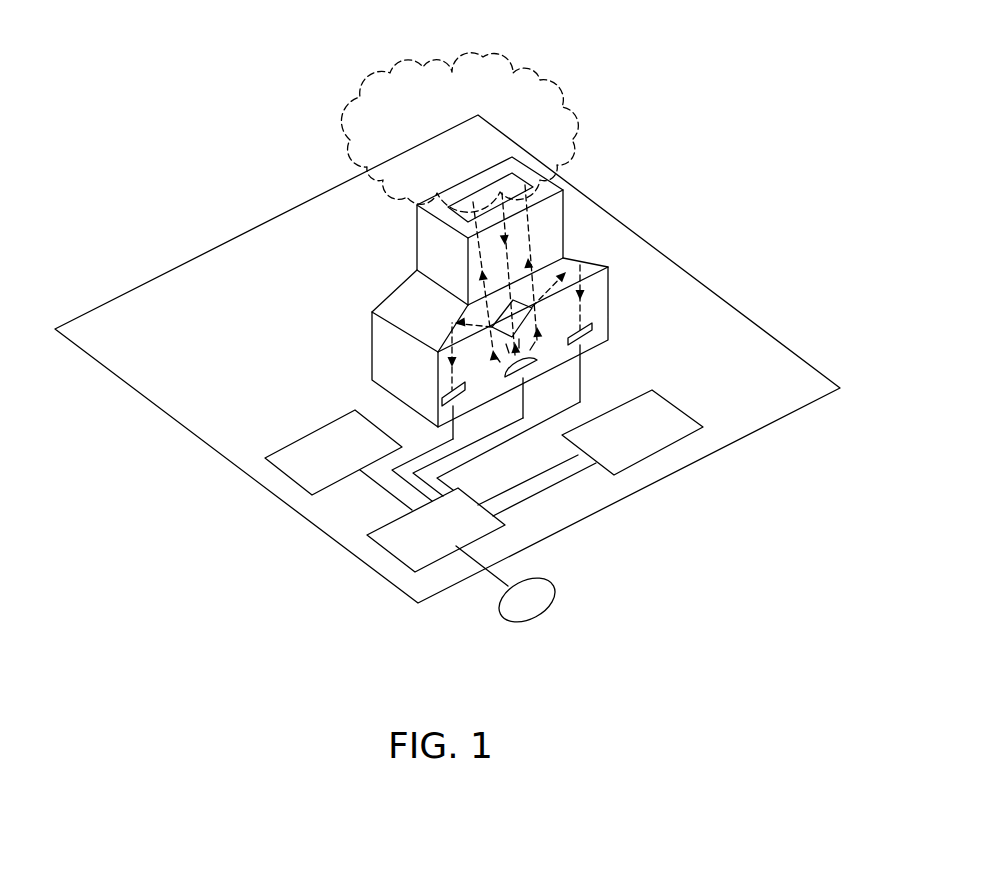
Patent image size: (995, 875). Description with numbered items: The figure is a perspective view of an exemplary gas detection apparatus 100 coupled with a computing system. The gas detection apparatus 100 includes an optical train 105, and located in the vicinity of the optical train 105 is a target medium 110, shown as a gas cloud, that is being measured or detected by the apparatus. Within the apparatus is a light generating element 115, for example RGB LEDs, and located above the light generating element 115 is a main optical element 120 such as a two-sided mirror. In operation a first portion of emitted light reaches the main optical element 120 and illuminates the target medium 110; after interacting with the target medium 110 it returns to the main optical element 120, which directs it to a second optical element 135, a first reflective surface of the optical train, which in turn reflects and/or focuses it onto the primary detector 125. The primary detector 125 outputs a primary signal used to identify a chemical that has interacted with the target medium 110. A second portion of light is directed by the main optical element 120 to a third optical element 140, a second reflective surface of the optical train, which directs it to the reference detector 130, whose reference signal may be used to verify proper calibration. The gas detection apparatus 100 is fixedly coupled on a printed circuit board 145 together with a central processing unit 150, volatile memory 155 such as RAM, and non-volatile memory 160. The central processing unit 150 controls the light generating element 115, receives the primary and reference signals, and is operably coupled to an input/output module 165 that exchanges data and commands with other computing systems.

The gas detection apparatus 100 is at (375, 213).
The optical train 105 is at (395, 282).
The target medium 110 is at (583, 95).
The light generating element 115 is at (532, 384).
The main optical element 120 is at (610, 268).
The primary detector 125 is at (443, 392).
The reference detector 130 is at (592, 328).
The second optical element 135 is at (410, 318).
The third optical element 140 is at (567, 250).
The printed circuit board 145 is at (256, 390).
The central processing unit 150 is at (387, 550).
The volatile memory 155 is at (285, 474).
The non-volatile memory 160 is at (660, 450).
The input/output module 165 is at (550, 583).